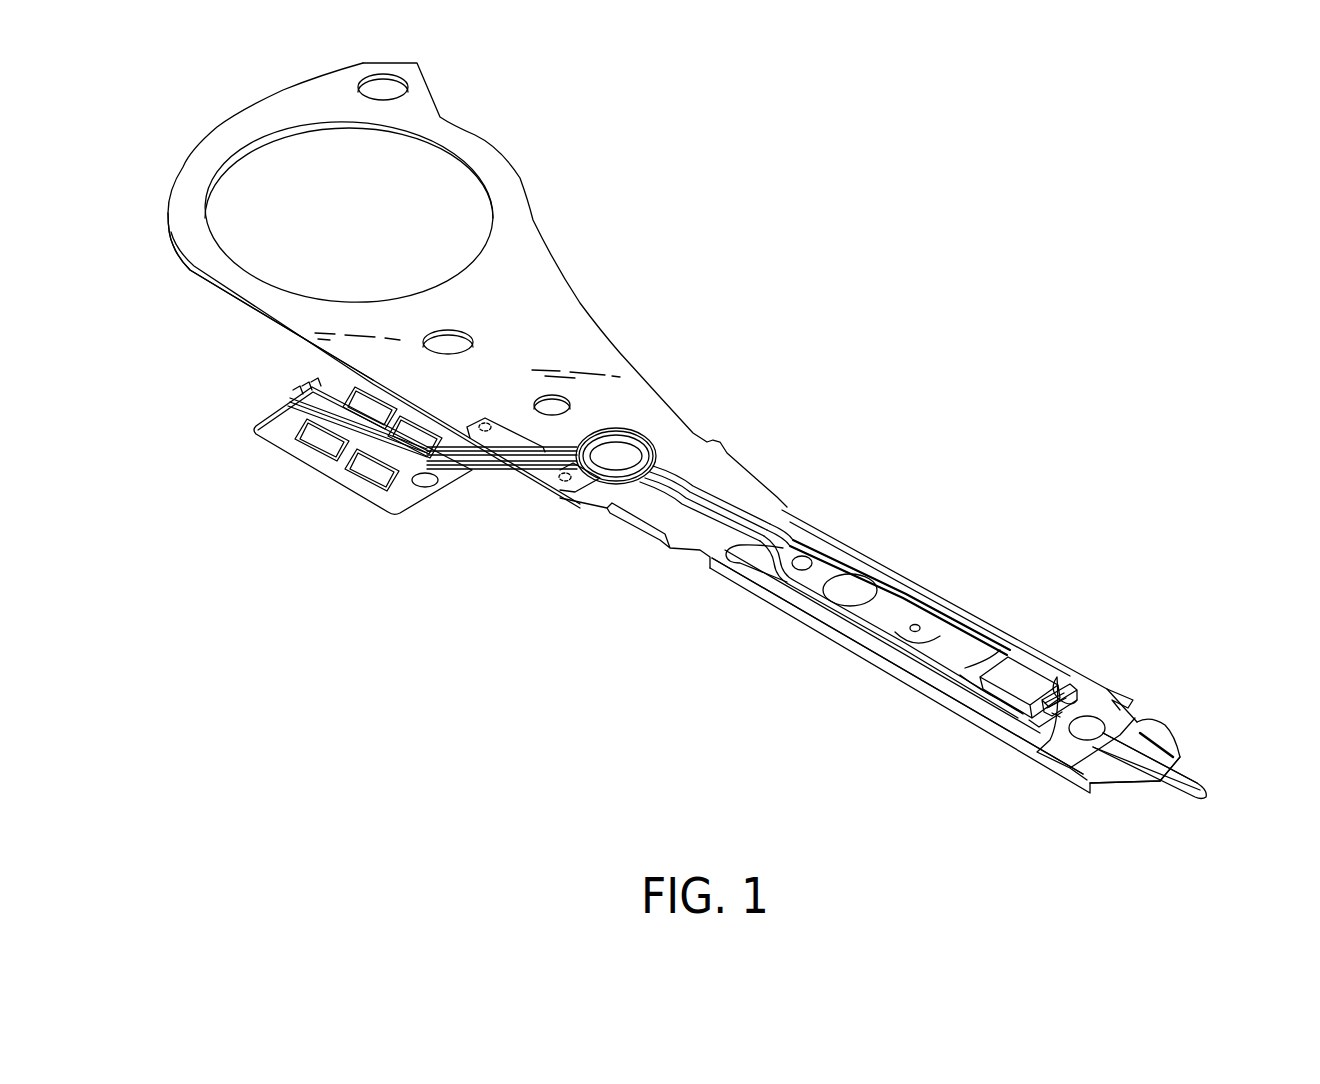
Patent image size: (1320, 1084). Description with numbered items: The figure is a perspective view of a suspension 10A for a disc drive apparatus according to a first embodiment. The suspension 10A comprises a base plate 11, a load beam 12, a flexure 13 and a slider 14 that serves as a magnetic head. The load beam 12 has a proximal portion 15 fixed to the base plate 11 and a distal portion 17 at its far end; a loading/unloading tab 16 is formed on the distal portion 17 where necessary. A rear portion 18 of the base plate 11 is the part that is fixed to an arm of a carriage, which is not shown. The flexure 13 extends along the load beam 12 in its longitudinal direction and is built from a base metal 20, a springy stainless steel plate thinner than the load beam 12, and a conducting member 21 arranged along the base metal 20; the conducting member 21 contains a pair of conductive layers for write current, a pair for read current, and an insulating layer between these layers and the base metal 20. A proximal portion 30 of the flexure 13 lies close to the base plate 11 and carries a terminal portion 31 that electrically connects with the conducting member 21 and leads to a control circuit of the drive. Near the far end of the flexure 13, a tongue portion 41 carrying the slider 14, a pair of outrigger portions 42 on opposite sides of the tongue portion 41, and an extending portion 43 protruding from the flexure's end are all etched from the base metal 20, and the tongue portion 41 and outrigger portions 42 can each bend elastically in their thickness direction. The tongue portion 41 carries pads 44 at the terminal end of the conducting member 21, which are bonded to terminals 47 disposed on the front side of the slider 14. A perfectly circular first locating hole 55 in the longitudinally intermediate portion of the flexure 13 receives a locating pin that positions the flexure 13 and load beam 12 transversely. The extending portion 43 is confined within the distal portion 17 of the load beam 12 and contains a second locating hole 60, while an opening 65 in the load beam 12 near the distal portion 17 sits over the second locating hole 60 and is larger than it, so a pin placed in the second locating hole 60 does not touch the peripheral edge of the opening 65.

The suspension 10A is at (866, 340).
The base plate 11 is at (572, 318).
The load beam 12 is at (947, 590).
The flexure 13 is at (843, 632).
The slider 14 is at (1020, 672).
The proximal portion 15 is at (667, 530).
The loading/unloading tab 16 is at (1200, 778).
The distal portion 17 is at (1148, 783).
The rear portion 18 is at (212, 270).
The base metal 20 is at (788, 533).
The conducting member 21 is at (868, 553).
The proximal portion 30 is at (273, 413).
The terminal portion 31 is at (360, 470).
The tongue portion 41 is at (1037, 727).
The outrigger portions 42 is at (1067, 680).
The extending portion 43 is at (1120, 710).
The pads 44 is at (1058, 717).
The terminals 47 is at (1057, 703).
The first locating hole 55 is at (805, 563).
The second locating hole 60 is at (1103, 730).
The opening 65 is at (1165, 725).